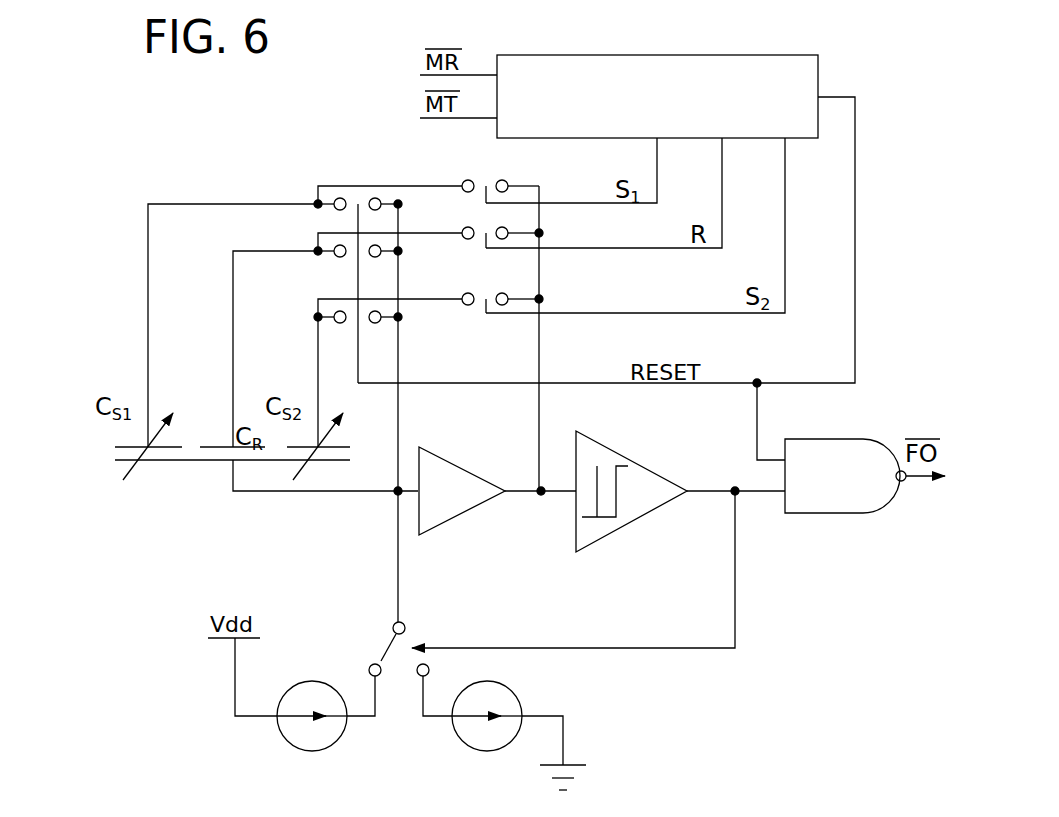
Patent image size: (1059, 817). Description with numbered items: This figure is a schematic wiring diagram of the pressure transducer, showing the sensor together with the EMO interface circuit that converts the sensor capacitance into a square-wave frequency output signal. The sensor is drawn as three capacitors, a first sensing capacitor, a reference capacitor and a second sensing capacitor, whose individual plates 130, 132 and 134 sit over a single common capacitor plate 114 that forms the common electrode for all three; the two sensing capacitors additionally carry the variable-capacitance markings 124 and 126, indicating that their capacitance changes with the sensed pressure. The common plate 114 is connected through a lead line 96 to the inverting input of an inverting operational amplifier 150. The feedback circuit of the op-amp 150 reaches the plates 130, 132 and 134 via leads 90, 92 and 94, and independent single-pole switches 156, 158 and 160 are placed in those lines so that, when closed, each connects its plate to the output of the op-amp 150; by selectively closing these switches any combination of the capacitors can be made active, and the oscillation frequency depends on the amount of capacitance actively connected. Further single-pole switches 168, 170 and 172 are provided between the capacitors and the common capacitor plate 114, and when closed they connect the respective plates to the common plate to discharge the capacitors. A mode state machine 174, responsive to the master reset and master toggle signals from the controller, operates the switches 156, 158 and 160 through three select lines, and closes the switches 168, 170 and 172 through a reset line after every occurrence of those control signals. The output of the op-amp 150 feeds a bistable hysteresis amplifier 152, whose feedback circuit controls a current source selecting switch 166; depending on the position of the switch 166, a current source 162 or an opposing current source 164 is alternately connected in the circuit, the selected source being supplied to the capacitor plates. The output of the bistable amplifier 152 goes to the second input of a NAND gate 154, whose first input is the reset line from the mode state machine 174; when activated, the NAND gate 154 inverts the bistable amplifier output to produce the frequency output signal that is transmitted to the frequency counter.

The lead 90 is at (185, 204).
The lead 92 is at (253, 251).
The lead 94 is at (318, 360).
The lead line 96 is at (290, 491).
The common capacitor plate 114 is at (187, 470).
The first sensing capacitor gap arrow 124 is at (122, 465).
The second sensing capacitor gap arrow 126 is at (323, 467).
The plate 130 is at (127, 447).
The plate 132 is at (225, 447).
The plate 134 is at (335, 447).
The inverting operational amplifier 150 is at (465, 463).
The bistable hysteresis amplifier 152 is at (650, 465).
The NAND gate 154 is at (845, 439).
The single-pole switch 156 is at (494, 182).
The single-pole switch 158 is at (500, 228).
The single-pole switch 160 is at (497, 292).
The current source 162 is at (308, 683).
The opposing current source 164 is at (505, 690).
The current source selecting switch 166 is at (400, 652).
The single-pole switch 168 is at (352, 201).
The single-pole switch 170 is at (353, 256).
The single-pole switch 172 is at (362, 322).
The mode state machine 174 is at (595, 55).